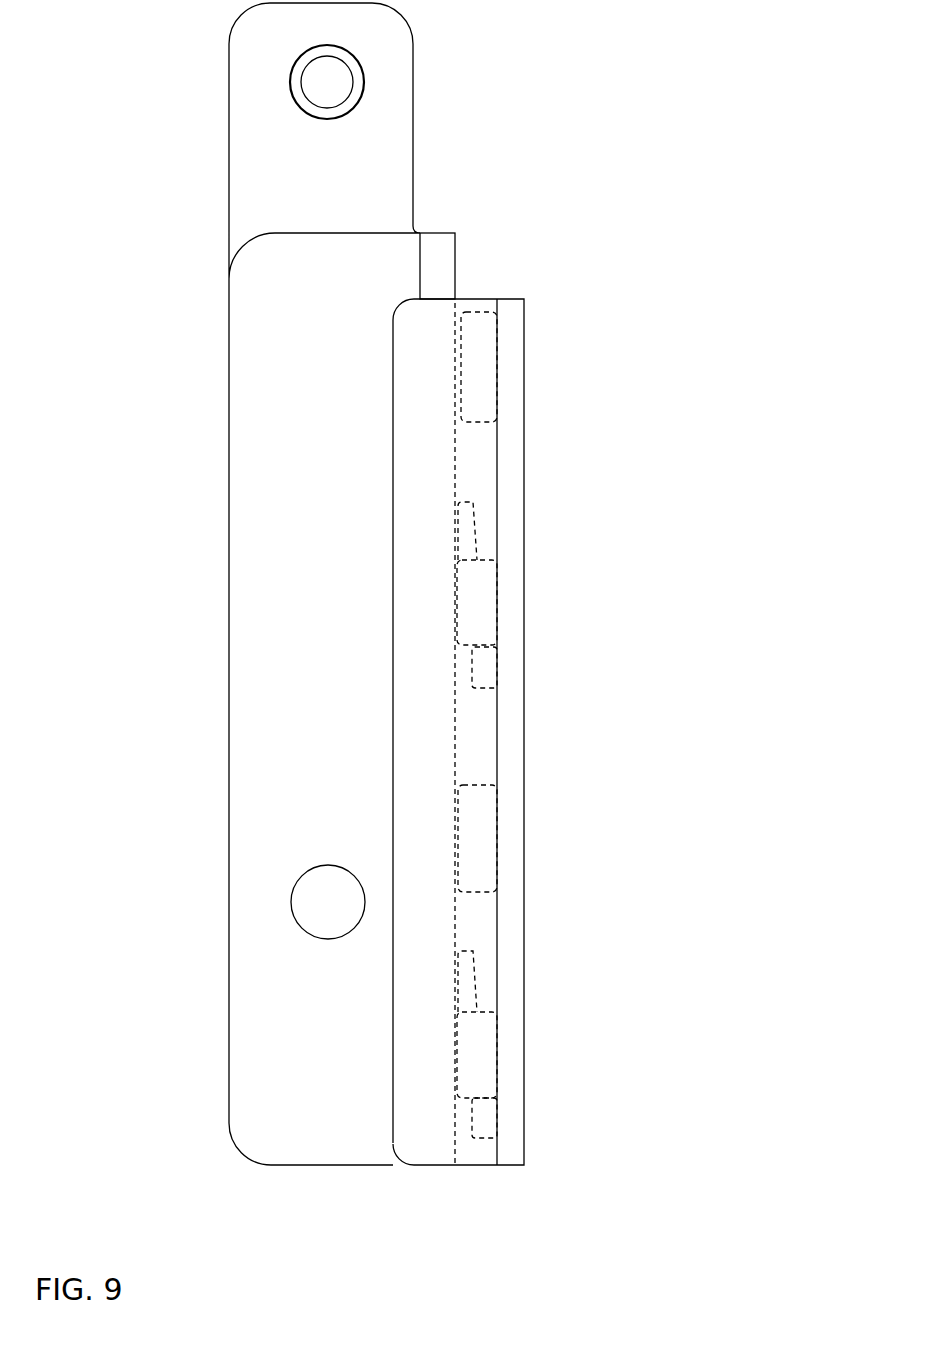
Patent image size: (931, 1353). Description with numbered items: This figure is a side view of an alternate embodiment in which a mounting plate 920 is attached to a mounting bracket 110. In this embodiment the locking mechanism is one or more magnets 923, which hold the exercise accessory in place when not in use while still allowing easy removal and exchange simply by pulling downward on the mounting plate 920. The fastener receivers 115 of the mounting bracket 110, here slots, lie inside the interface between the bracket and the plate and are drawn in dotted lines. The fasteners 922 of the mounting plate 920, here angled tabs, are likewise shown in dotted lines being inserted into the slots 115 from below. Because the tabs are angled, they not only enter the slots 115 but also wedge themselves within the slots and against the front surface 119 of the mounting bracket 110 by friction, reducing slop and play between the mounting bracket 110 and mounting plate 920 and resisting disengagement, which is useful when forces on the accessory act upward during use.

The mounting bracket 110 is at (178, 1034).
The fastener receivers 115 is at (477, 600).
The front surface 119 is at (474, 722).
The mounting plate 920 is at (621, 961).
The fasteners 922 is at (469, 988).
The magnets 923 is at (477, 838).